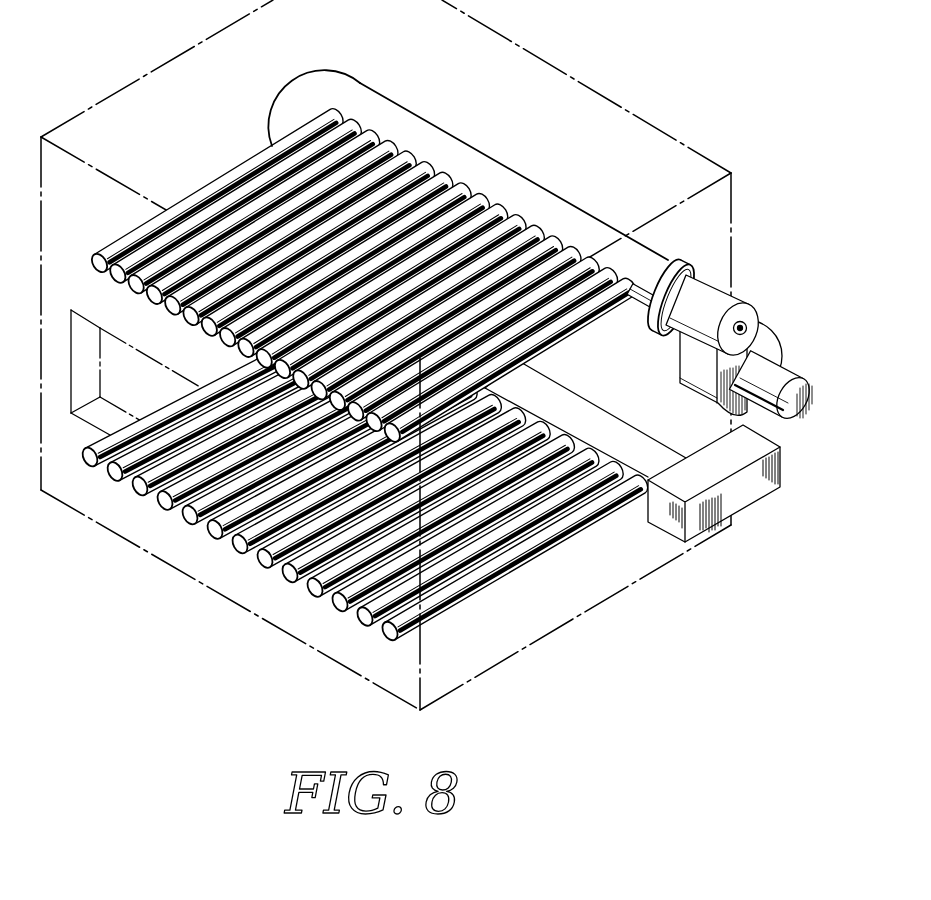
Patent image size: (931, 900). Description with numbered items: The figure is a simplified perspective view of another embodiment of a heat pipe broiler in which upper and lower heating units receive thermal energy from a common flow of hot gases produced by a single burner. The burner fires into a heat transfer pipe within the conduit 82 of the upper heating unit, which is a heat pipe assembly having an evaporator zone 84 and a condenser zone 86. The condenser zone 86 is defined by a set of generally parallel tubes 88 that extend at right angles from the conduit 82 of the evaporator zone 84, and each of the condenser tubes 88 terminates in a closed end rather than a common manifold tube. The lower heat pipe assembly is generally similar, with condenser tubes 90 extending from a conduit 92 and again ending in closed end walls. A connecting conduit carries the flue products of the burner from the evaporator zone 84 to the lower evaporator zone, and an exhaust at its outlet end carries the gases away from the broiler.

The conduit 82 is at (541, 186).
The evaporator zone 84 is at (601, 203).
The condenser zone 86 is at (586, 332).
The condenser tubes 88 is at (447, 375).
The condenser tubes 90 is at (416, 590).
The conduit 92 is at (621, 423).